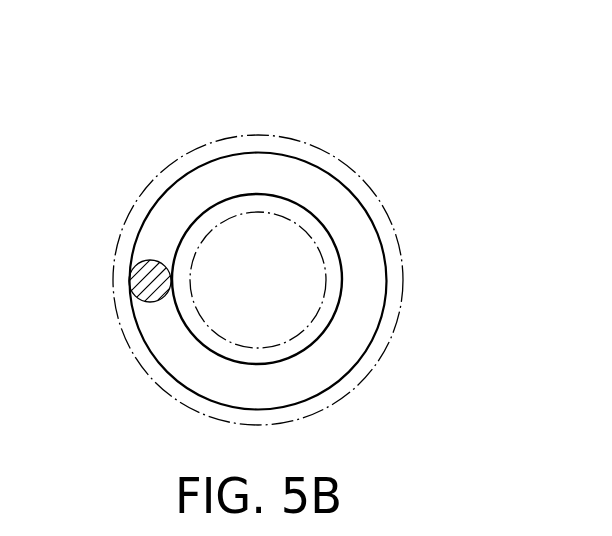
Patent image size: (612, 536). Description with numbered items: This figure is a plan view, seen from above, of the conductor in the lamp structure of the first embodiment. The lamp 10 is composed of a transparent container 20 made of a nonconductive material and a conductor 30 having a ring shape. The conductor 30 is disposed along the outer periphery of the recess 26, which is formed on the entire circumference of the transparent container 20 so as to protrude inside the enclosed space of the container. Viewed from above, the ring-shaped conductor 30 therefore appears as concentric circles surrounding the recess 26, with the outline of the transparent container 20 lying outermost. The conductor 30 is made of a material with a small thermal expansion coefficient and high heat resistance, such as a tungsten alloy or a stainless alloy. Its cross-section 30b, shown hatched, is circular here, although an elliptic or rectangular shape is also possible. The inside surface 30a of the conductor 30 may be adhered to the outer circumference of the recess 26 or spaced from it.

The lamp 10 is at (273, 228).
The transparent container 20 is at (403, 254).
The recess 26 is at (326, 288).
The conductor 30 is at (257, 258).
The inside surface 30a is at (335, 248).
The cross-section 30b is at (146, 272).